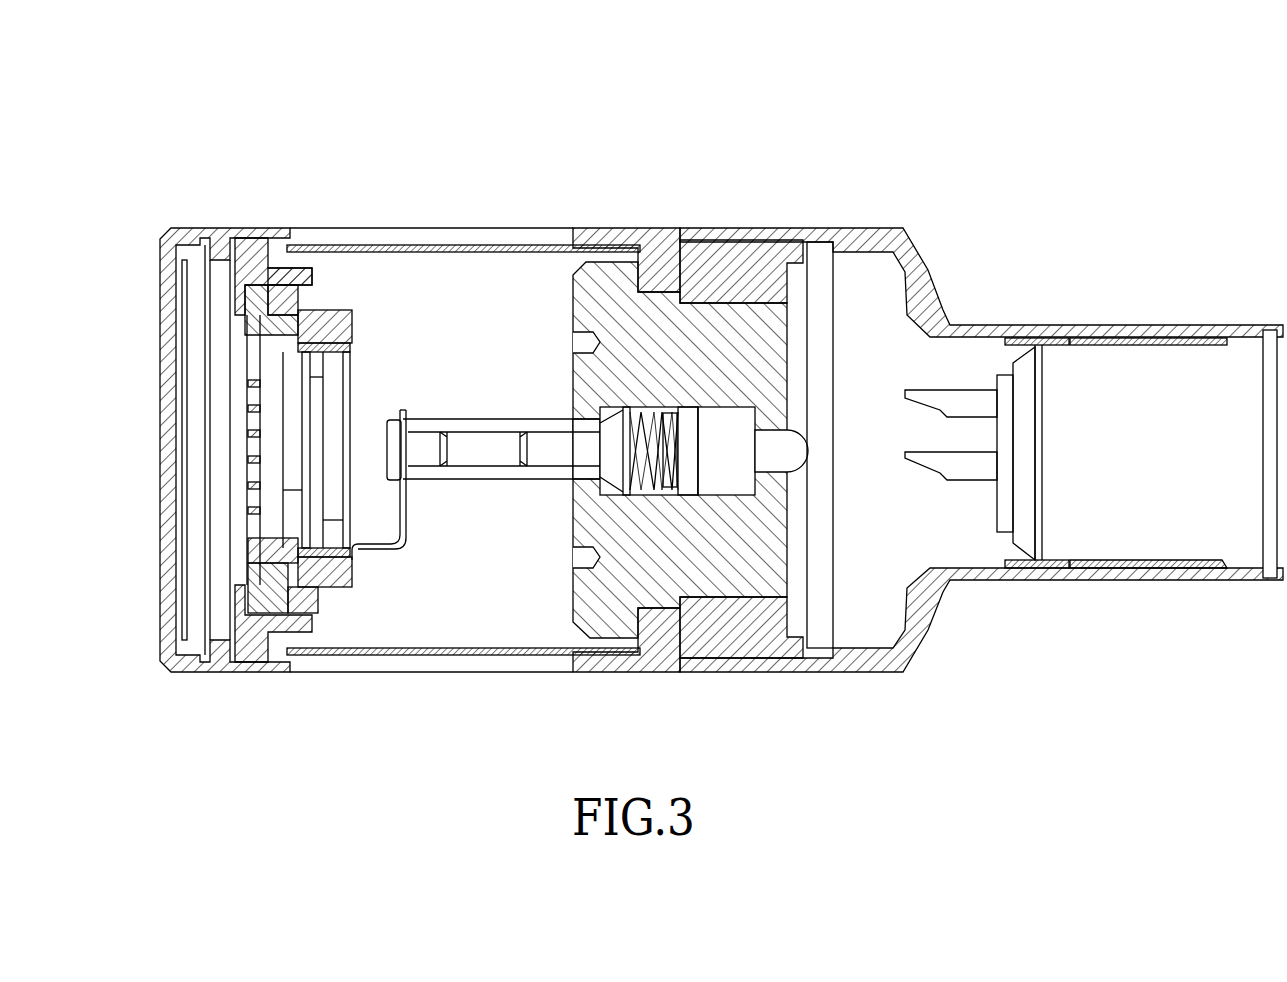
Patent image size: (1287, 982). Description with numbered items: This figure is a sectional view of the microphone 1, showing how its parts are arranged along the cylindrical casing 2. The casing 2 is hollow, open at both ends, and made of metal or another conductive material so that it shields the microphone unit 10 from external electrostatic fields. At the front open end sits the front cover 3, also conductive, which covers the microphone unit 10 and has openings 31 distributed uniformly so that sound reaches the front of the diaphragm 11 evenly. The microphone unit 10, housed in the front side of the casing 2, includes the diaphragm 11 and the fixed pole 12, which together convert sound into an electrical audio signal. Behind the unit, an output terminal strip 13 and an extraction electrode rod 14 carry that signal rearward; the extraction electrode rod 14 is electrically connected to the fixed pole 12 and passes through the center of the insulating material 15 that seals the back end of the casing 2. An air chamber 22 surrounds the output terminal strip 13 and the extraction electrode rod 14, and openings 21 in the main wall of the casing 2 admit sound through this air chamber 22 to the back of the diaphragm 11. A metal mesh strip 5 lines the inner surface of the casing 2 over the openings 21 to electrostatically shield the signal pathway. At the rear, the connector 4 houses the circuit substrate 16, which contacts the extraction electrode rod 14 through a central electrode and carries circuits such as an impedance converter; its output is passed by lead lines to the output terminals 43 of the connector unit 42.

The microphone 1 is at (728, 118).
The casing 2 is at (645, 246).
The front cover 3 is at (195, 233).
The connector 4 is at (850, 243).
The metal mesh strip 5 is at (520, 245).
The microphone unit 10 is at (293, 390).
The diaphragm 11 is at (268, 338).
The fixed pole 12 is at (275, 287).
The output terminal strip 13 is at (403, 413).
The extraction electrode rod 14 is at (485, 431).
The insulating material 15 is at (745, 350).
The circuit substrate 16 is at (822, 573).
The openings 21 is at (455, 247).
The air chamber 22 is at (448, 600).
The openings 31 is at (175, 466).
The connector unit 42 is at (1143, 385).
The output terminals 43 is at (973, 462).